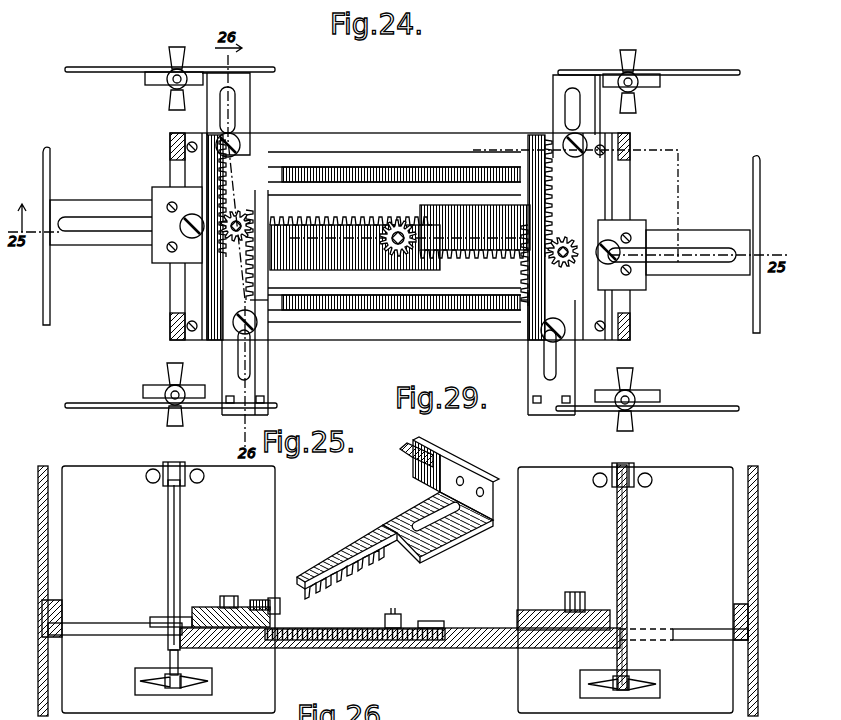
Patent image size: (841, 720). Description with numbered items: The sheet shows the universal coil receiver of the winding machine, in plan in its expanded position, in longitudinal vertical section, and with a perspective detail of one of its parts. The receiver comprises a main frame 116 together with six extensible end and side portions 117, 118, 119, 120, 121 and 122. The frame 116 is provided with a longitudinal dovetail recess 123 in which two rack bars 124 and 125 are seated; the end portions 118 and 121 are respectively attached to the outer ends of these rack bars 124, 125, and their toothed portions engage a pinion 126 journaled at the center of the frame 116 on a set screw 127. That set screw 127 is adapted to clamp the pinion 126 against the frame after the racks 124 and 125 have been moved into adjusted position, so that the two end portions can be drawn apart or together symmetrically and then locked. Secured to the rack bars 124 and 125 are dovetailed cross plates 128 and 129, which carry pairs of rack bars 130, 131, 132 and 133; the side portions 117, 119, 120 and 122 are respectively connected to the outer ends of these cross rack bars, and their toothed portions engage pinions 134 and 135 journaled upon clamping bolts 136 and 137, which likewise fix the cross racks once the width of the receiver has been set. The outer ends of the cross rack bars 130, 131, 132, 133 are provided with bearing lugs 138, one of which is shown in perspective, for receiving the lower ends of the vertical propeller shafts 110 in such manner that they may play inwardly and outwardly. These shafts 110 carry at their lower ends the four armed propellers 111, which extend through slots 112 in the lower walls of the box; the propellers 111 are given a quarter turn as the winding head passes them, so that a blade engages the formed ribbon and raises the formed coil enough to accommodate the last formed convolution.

In FIG. 24, the vertical shafts 110 is at (172, 87).
In FIG. 25, the vertical shafts 110 is at (180, 523).
In FIG. 24, the four armed propellers 111 is at (146, 80).
In FIG. 25, the four armed propellers 111 is at (212, 682).
In FIG. 25, the slots 112 is at (135, 683).
In FIG. 24, the main frame 116 is at (400, 150).
In FIG. 25, the main frame 116 is at (474, 649).
In FIG. 24, the side portion 117 is at (100, 408).
In FIG. 24, the end portion 118 is at (50, 302).
In FIG. 25, the end portion 118 is at (48, 540).
In FIG. 24, the side portion 119 is at (106, 67).
In FIG. 24, the side portion 120 is at (710, 70).
In FIG. 24, the end portion 121 is at (753, 174).
In FIG. 25, the end portion 121 is at (748, 534).
In FIG. 24, the side portion 122 is at (682, 411).
In FIG. 24, the longitudinal dovetail recess 123 is at (342, 265).
In FIG. 24, the rack bar 124 is at (97, 203).
In FIG. 25, the rack bar 124 is at (106, 636).
In FIG. 24, the rack bar 125 is at (703, 232).
In FIG. 25, the rack bar 125 is at (698, 632).
In FIG. 24, the pinion 126 is at (440, 215).
In FIG. 25, the pinion 126 is at (436, 620).
In FIG. 24, the set screw 127 is at (395, 222).
In FIG. 25, the set screw 127 is at (392, 614).
In FIG. 24, the dovetailed cross plate 128 is at (272, 327).
In FIG. 25, the dovetailed cross plate 128 is at (272, 614).
In FIG. 24, the dovetailed cross plate 129 is at (520, 327).
In FIG. 25, the dovetailed cross plate 129 is at (518, 617).
In FIG. 24, the rack bar 130 is at (268, 378).
In FIG. 25, the rack bar 130 is at (280, 602).
In FIG. 24, the rack bar 131 is at (250, 111).
In FIG. 25, the rack bar 131 is at (198, 612).
In FIG. 24, the rack bar 132 is at (553, 106).
In FIG. 25, the rack bar 132 is at (560, 608).
In FIG. 24, the rack bar 133 is at (528, 378).
In FIG. 24, the pinion 134 is at (250, 210).
In FIG. 25, the pinion 134 is at (255, 600).
In FIG. 24, the pinion 135 is at (552, 262).
In FIG. 24, the clamping bolt 136 is at (228, 236).
In FIG. 25, the clamping bolt 136 is at (226, 596).
In FIG. 24, the clamping bolt 137 is at (600, 235).
In FIG. 29, the bearing lugs 138 is at (410, 452).